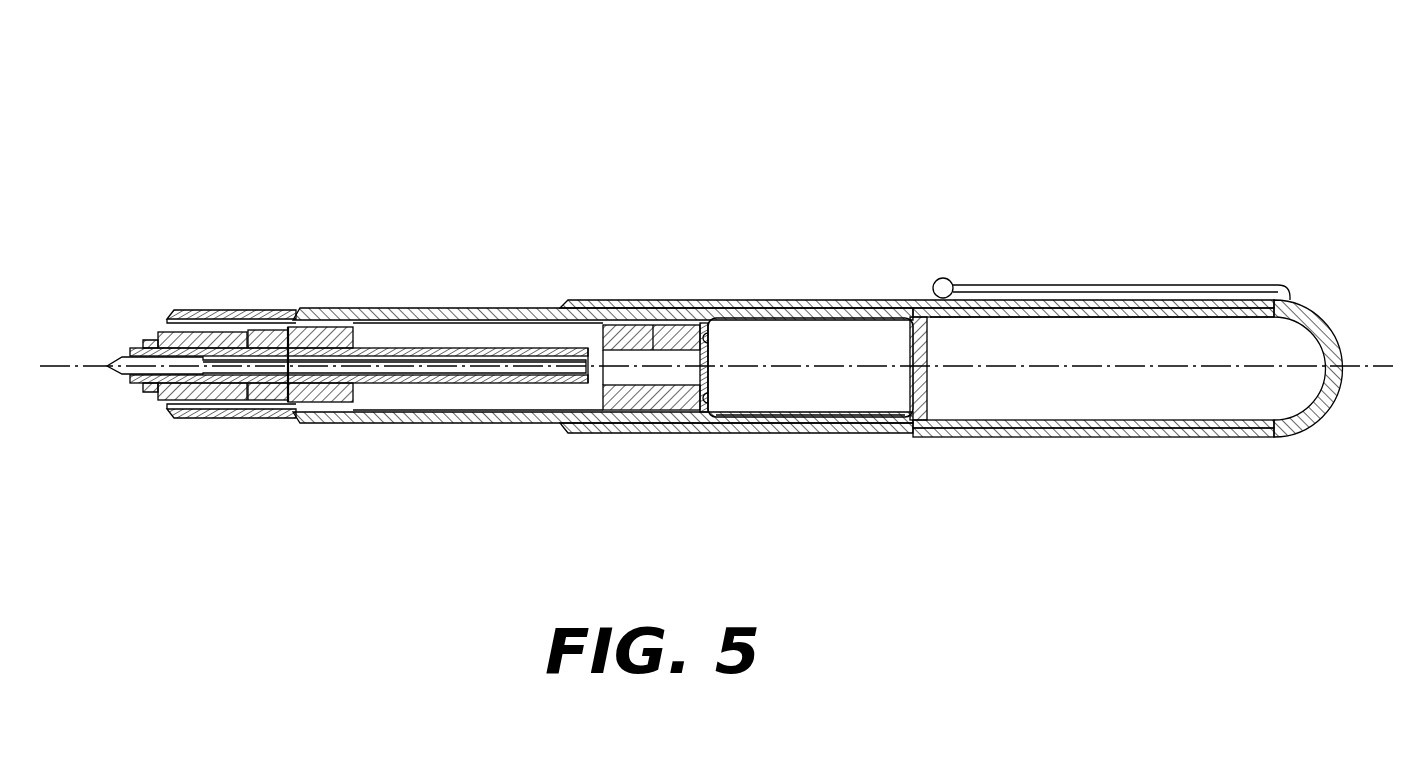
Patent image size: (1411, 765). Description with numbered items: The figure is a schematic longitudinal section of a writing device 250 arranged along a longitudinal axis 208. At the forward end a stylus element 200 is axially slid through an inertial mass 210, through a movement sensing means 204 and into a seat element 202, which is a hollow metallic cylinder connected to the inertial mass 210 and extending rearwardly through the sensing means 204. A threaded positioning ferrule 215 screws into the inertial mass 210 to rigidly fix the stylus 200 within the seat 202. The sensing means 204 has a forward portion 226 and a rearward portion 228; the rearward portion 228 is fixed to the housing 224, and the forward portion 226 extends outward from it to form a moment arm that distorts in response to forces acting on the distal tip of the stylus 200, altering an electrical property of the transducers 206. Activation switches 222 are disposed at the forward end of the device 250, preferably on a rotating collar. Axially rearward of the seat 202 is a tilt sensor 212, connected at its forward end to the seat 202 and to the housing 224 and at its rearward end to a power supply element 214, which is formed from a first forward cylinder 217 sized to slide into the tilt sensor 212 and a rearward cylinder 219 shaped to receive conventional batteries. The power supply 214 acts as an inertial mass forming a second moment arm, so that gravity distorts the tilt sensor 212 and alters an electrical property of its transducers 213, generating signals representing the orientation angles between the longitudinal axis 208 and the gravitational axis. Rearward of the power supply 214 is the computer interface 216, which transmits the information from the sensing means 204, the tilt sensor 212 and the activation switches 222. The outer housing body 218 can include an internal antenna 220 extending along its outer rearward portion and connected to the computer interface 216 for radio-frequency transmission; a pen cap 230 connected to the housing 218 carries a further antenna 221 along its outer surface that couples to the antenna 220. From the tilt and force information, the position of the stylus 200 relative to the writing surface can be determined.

The stylus element 200 is at (563, 370).
The seat element 202 is at (435, 384).
The movement sensing means 204 is at (280, 413).
The transducers 206 is at (245, 413).
The longitudinal axis 208 is at (1358, 366).
The inertial mass 210 is at (150, 400).
The tilt sensor 212 is at (683, 375).
The transducers 213 is at (705, 322).
The power supply element 214 is at (798, 360).
The threaded positioning ferrule 215 is at (147, 332).
The computer interface 216 is at (1205, 358).
The first forward cylinder 217 is at (657, 350).
The outer housing body 218 is at (1108, 432).
The rearward cylinder 219 is at (833, 403).
The internal antenna 220 is at (936, 436).
The antenna 221 is at (1232, 434).
The activation switches 222 is at (232, 316).
The housing 224 is at (420, 322).
The forward portion 226 is at (272, 325).
The rearward portion 228 is at (333, 313).
The pen cap 230 is at (1302, 292).
The device 250 is at (718, 110).